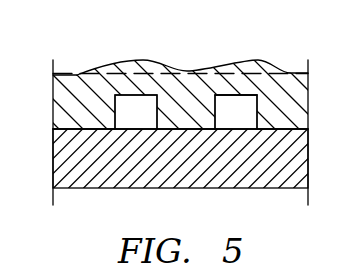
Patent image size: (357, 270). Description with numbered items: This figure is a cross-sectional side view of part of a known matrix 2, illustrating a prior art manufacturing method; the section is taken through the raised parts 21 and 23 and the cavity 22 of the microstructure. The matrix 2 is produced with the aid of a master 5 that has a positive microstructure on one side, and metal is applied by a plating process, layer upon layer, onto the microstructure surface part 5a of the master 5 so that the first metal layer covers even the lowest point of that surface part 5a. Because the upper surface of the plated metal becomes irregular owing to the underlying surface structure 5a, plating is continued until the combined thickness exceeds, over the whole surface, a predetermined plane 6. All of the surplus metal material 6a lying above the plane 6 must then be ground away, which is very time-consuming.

The matrix 2 is at (172, 82).
The master 5 is at (87, 190).
The microstructure surface part 5a is at (68, 128).
The predetermined plane 6 is at (70, 73).
The surplus metal material 6a is at (137, 61).
The raised part 21 is at (176, 122).
The cavity 22 is at (237, 92).
The raised part 23 is at (272, 117).